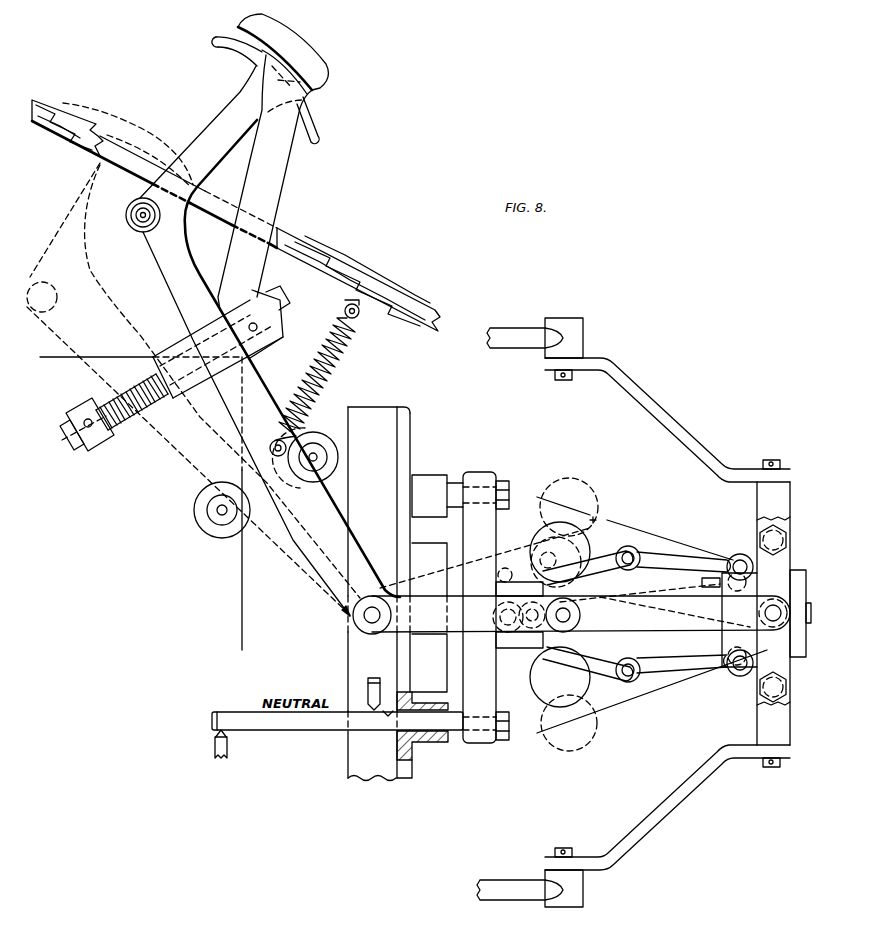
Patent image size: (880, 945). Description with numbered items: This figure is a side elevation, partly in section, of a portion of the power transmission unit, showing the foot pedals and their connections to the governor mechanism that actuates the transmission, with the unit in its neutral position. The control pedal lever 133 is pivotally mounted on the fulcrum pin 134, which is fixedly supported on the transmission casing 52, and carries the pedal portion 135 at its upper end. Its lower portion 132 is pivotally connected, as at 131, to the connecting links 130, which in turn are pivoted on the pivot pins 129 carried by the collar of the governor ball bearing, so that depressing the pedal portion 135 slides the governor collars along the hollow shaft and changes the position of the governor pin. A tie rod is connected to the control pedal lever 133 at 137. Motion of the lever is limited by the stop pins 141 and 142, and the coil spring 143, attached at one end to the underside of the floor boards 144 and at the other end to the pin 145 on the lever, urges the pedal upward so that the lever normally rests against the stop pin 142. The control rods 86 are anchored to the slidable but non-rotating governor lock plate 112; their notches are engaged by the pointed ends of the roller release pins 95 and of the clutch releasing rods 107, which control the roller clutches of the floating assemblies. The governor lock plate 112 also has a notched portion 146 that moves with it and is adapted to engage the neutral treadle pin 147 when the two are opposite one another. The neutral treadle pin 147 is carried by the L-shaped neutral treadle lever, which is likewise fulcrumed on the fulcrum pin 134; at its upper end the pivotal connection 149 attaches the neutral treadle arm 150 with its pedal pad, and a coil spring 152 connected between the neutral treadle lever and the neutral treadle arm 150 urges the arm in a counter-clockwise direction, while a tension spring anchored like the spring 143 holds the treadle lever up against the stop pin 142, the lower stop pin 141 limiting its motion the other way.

The transmission casing 52 is at (405, 407).
The control rods 86 is at (332, 726).
The roller release pins 95 is at (227, 751).
The clutch releasing rods 107 is at (366, 686).
The governor lock plate 112 is at (492, 542).
The pivot pins 129 is at (775, 605).
The connecting links 130 is at (663, 422).
The pivotal connection 131 is at (580, 616).
The lower portion of the control pedal lever 132 is at (433, 634).
The control pedal lever 133 is at (173, 288).
The fulcrum pin 134 is at (364, 624).
The pedal portion 135 is at (238, 56).
The tie rod connection 137 is at (135, 228).
The stop pin 141 is at (205, 527).
The stop pin 142 is at (337, 458).
The coil spring 143 is at (330, 368).
The floor boards 144 is at (386, 297).
The pin 145 is at (276, 443).
The notched portion 146 is at (497, 617).
The neutral treadle pin 147 is at (512, 649).
The pivotal connection 149 is at (275, 315).
The neutral treadle arm 150 is at (270, 181).
The coil spring 152 is at (130, 424).